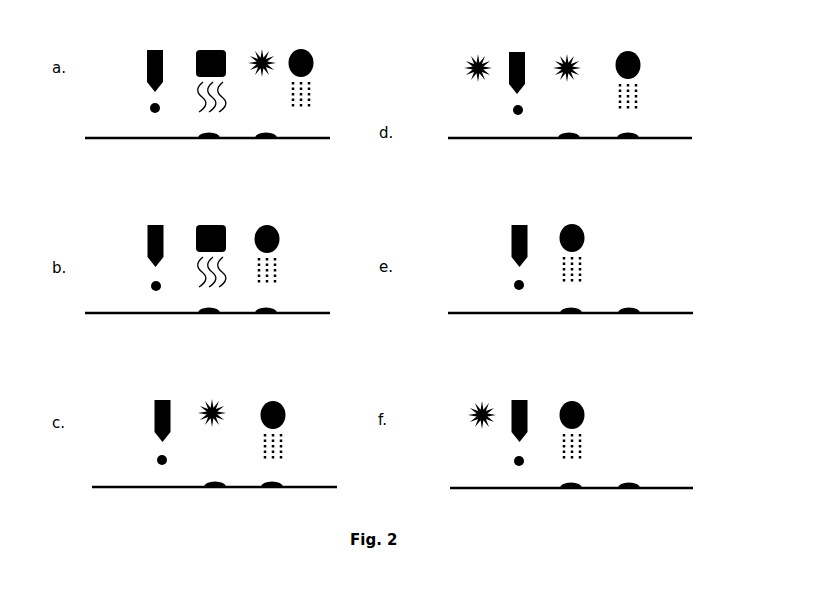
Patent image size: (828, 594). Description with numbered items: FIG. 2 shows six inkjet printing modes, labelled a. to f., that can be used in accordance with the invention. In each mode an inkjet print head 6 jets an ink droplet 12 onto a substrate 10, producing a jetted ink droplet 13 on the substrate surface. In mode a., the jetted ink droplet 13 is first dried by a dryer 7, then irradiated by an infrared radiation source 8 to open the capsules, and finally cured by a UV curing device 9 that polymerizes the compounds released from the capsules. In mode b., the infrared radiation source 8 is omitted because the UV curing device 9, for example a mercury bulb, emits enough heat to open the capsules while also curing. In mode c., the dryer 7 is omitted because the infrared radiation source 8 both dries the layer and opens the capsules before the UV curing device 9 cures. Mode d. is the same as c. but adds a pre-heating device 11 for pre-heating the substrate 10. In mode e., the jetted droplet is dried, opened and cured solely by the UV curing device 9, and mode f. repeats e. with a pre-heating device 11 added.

The inkjet print head 6 is at (147, 50).
The dryer 7 is at (217, 50).
The infrared radiation source 8 is at (268, 55).
The UV curing device 9 is at (310, 50).
The substrate 10 is at (132, 140).
The pre-heating device 11 is at (472, 55).
The ink droplet 12 is at (155, 107).
The jetted ink droplet 13 is at (213, 142).